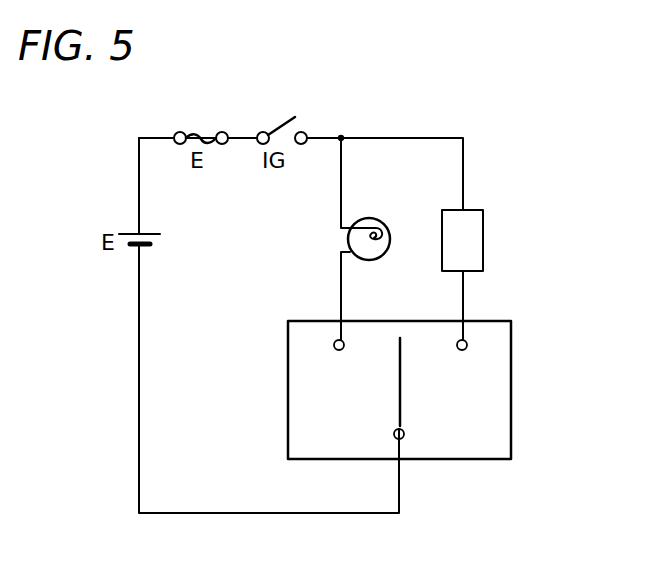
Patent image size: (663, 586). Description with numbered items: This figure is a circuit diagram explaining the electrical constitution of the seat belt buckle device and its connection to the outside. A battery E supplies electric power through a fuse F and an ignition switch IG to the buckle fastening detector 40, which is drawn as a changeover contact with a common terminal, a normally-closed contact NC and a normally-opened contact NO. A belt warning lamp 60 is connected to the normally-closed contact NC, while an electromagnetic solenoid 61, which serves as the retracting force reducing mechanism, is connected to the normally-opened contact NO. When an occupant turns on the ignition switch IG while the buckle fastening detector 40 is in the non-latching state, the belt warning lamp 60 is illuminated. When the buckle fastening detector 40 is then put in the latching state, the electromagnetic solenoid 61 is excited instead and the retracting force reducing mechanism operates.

The buckle fastening detector 40 is at (512, 389).
The belt warning lamp 60 is at (365, 218).
The electromagnetic solenoid 61 is at (483, 240).